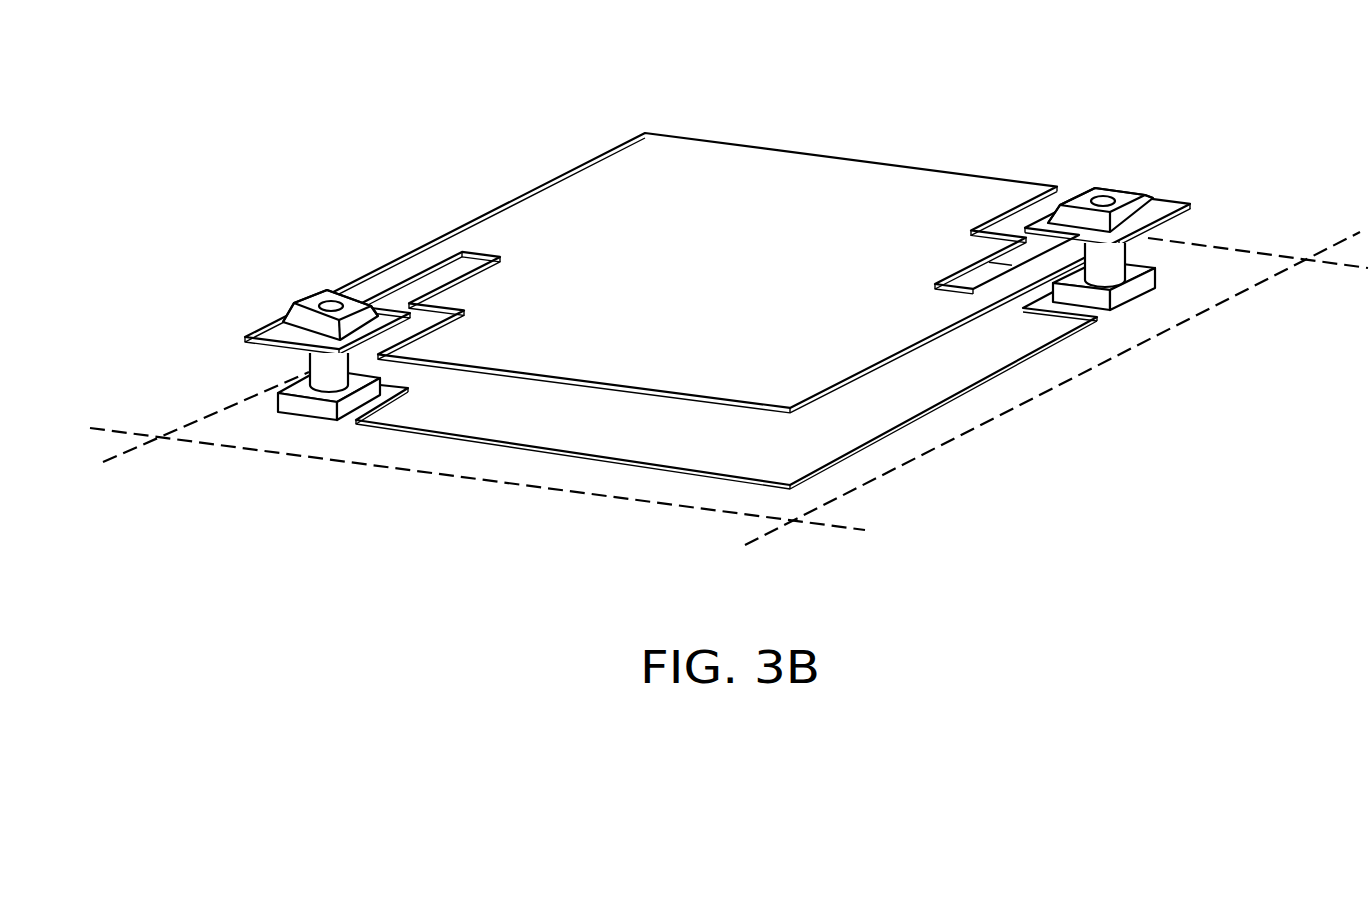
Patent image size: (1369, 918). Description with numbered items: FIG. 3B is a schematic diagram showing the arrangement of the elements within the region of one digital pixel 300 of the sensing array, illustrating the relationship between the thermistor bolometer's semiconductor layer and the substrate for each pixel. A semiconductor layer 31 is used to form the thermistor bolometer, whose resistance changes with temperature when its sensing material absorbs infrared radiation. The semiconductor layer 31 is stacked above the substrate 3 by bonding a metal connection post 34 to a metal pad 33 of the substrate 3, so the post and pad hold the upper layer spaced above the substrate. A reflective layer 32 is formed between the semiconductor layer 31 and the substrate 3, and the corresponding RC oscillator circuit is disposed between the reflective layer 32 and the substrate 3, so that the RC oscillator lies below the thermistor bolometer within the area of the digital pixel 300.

The digital pixel 300 is at (729, 303).
The semiconductor layer 31 is at (818, 177).
The reflective layer 32 is at (540, 422).
The metal pad 33 is at (307, 407).
The metal connection post 34 is at (313, 318).
The substrate 3 is at (1222, 262).